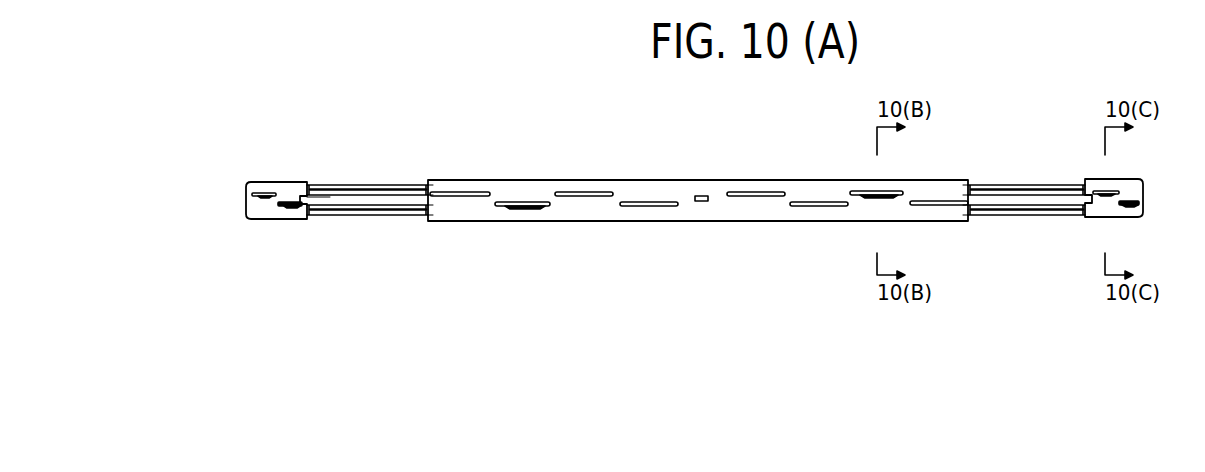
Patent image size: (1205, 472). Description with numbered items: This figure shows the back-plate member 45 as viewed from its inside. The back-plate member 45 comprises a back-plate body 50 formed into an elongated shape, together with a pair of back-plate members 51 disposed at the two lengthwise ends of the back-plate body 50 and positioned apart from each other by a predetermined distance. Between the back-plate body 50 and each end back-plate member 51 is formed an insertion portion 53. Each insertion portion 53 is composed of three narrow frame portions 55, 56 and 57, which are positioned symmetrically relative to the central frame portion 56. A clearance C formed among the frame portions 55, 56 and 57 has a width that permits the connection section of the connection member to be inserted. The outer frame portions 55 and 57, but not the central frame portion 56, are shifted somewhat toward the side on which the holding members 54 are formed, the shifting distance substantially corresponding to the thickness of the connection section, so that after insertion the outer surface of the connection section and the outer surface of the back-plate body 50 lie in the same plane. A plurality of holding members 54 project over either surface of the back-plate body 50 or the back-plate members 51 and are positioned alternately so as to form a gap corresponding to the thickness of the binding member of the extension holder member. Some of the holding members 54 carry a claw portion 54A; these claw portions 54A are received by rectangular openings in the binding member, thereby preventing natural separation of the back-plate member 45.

The back-plate member 45 is at (682, 174).
The back-plate body 50 is at (740, 221).
The back-plate members 51 is at (290, 221).
The insertion portions 53 is at (360, 178).
The frame portion 57 is at (411, 185).
The central frame portion 56 is at (322, 188).
The frame portion 55 is at (391, 216).
The clearance C is at (336, 216).
The holding members 54 is at (257, 186).
The claw portion 54A is at (527, 200).